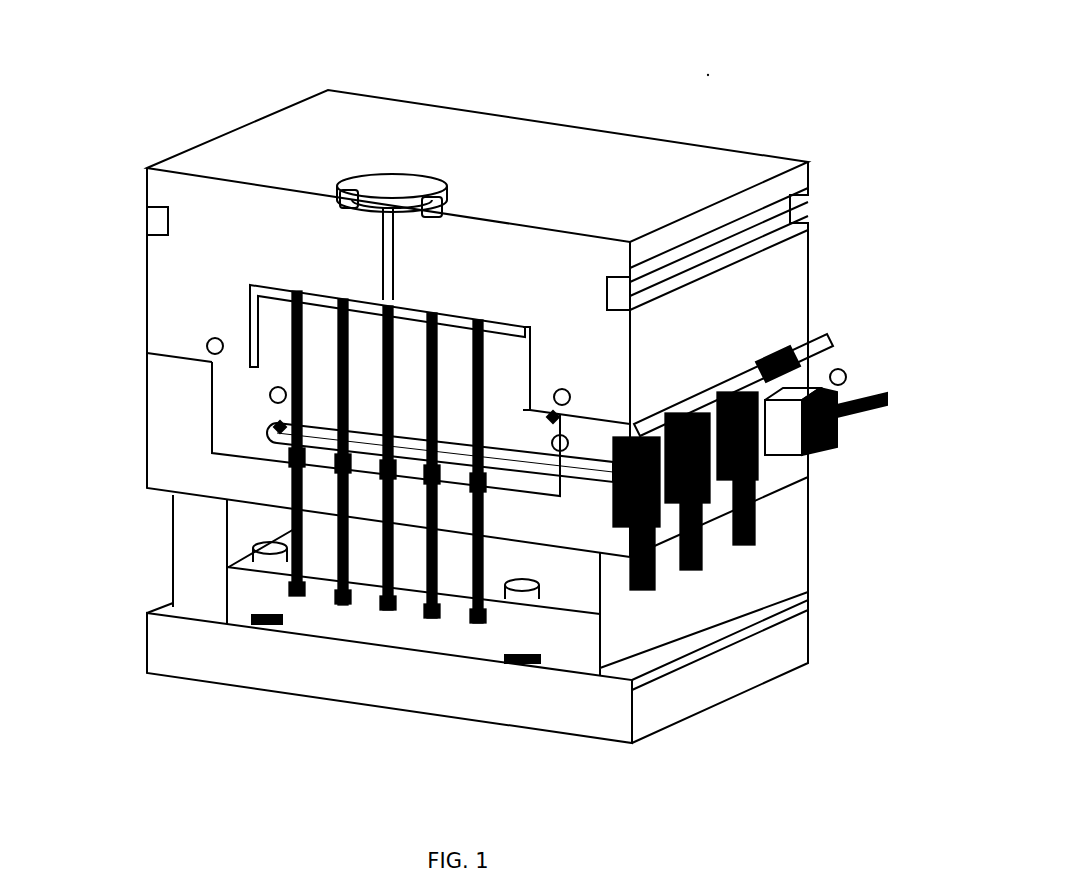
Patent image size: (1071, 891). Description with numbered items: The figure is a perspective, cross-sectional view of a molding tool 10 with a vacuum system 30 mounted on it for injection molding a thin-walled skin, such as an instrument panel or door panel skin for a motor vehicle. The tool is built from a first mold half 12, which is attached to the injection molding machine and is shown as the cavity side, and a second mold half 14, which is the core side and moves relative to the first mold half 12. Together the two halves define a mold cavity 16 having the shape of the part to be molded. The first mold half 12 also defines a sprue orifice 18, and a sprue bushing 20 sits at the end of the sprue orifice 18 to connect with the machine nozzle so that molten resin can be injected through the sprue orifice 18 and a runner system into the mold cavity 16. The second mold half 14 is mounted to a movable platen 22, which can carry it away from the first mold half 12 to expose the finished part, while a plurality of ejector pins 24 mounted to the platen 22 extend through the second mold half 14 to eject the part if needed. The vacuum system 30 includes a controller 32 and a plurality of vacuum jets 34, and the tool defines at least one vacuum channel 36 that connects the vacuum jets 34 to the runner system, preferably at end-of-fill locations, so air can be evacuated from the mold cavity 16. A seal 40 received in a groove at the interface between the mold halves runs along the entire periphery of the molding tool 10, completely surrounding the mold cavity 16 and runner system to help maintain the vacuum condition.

The molding tool 10 is at (708, 72).
The first mold half 12 is at (144, 272).
The second mold half 14 is at (142, 421).
The mold cavity 16 is at (335, 298).
The sprue orifice 18 is at (382, 258).
The sprue bushing 20 is at (358, 192).
The movable platen 22 is at (168, 562).
The ejector pins 24 is at (293, 367).
The vacuum system 30 is at (843, 352).
The controller 32 is at (835, 440).
The vacuum jets 34 is at (758, 486).
The vacuum channel 36 is at (480, 417).
The seal 40 is at (221, 372).